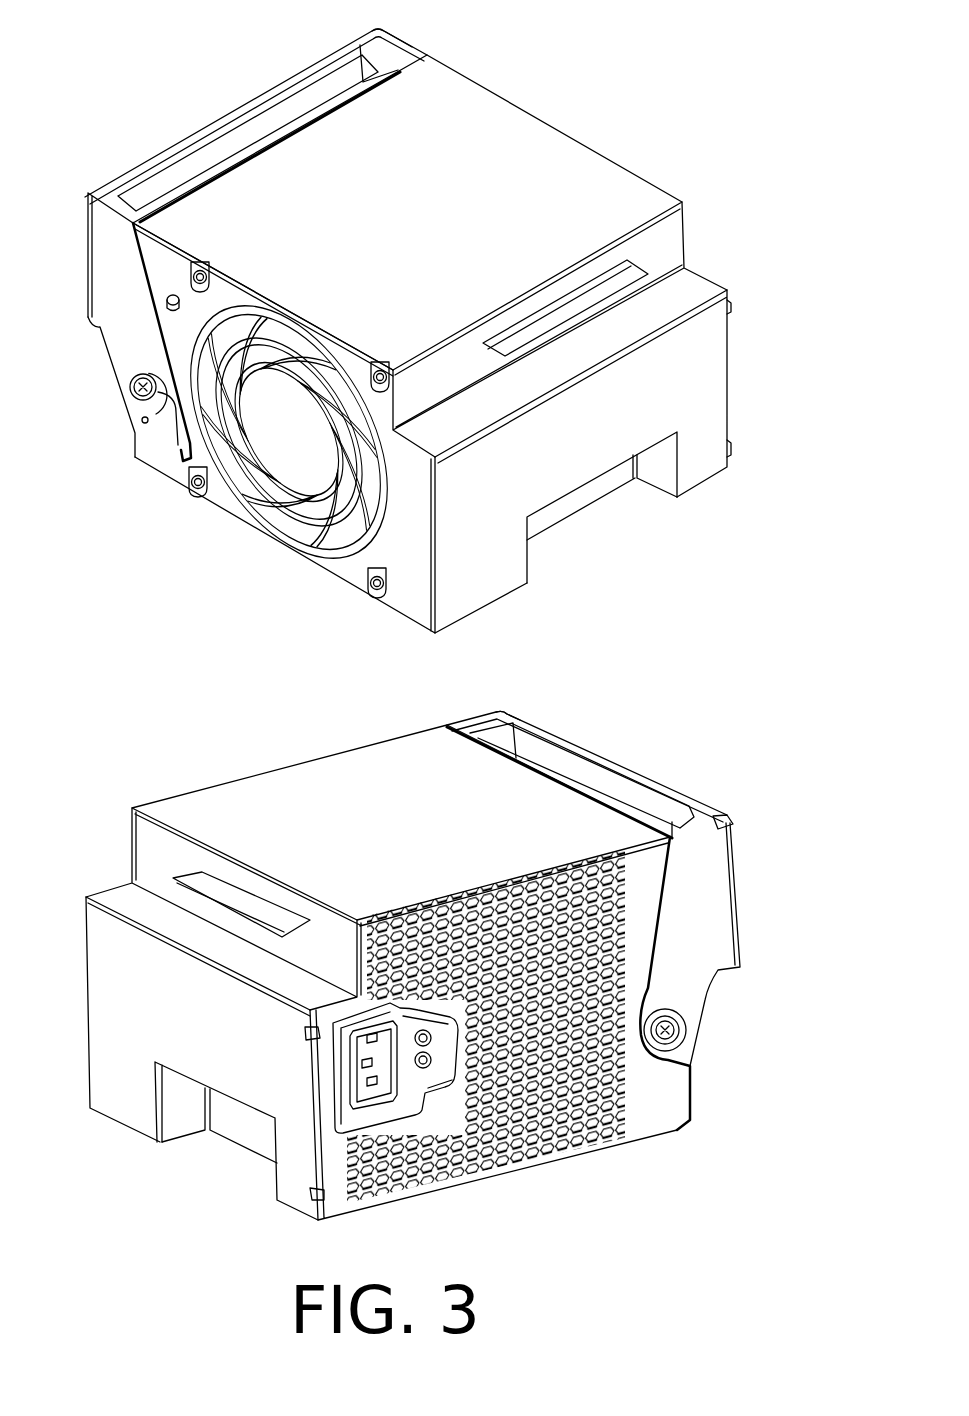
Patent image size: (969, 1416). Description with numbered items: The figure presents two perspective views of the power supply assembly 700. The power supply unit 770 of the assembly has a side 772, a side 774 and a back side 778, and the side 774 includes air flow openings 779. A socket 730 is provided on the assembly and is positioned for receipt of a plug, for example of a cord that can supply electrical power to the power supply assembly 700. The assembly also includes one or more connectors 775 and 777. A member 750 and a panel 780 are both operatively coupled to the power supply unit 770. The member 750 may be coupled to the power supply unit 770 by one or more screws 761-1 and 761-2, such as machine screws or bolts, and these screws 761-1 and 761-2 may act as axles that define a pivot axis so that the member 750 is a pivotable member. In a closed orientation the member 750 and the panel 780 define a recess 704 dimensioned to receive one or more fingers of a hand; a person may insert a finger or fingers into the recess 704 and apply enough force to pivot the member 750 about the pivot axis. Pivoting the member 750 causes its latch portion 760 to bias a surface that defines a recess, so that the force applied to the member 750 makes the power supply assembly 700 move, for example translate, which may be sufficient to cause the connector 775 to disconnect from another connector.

The power supply assembly 700 is at (648, 78).
The recess 704 is at (318, 92).
The socket 730 is at (336, 1072).
The member 750 is at (253, 105).
The latch portion 760 is at (125, 350).
The screw 761-1 is at (131, 398).
The screw 761-2 is at (682, 1035).
The power supply unit 770 is at (439, 208).
The side 772 is at (424, 563).
The side 774 is at (662, 889).
The connector 775 is at (598, 285).
The connector 777 is at (597, 492).
The back side 778 is at (611, 433).
The air flow openings 779 is at (612, 1135).
The panel 780 is at (412, 40).